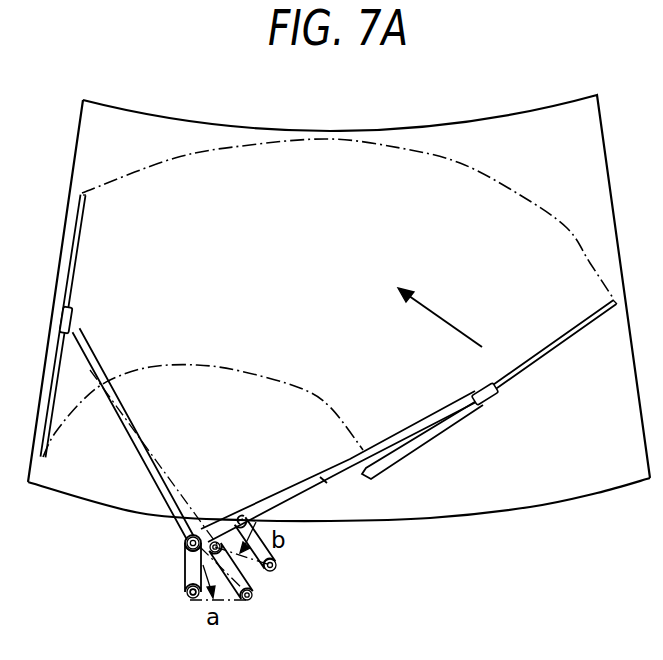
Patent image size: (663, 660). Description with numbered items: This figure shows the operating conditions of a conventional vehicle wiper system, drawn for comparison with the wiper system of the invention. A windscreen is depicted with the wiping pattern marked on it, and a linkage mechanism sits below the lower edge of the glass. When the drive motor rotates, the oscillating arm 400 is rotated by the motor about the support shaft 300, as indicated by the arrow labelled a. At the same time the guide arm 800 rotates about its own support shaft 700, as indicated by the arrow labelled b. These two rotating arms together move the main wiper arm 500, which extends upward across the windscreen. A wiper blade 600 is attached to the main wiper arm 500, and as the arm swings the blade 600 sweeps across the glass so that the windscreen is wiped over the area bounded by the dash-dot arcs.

The support shaft 300 is at (187, 598).
The oscillating arm 400 is at (185, 562).
The main wiper arm 500 is at (356, 470).
The wiper blade 600 is at (528, 370).
The support shaft 700 is at (277, 569).
The guide arm 800 is at (277, 553).